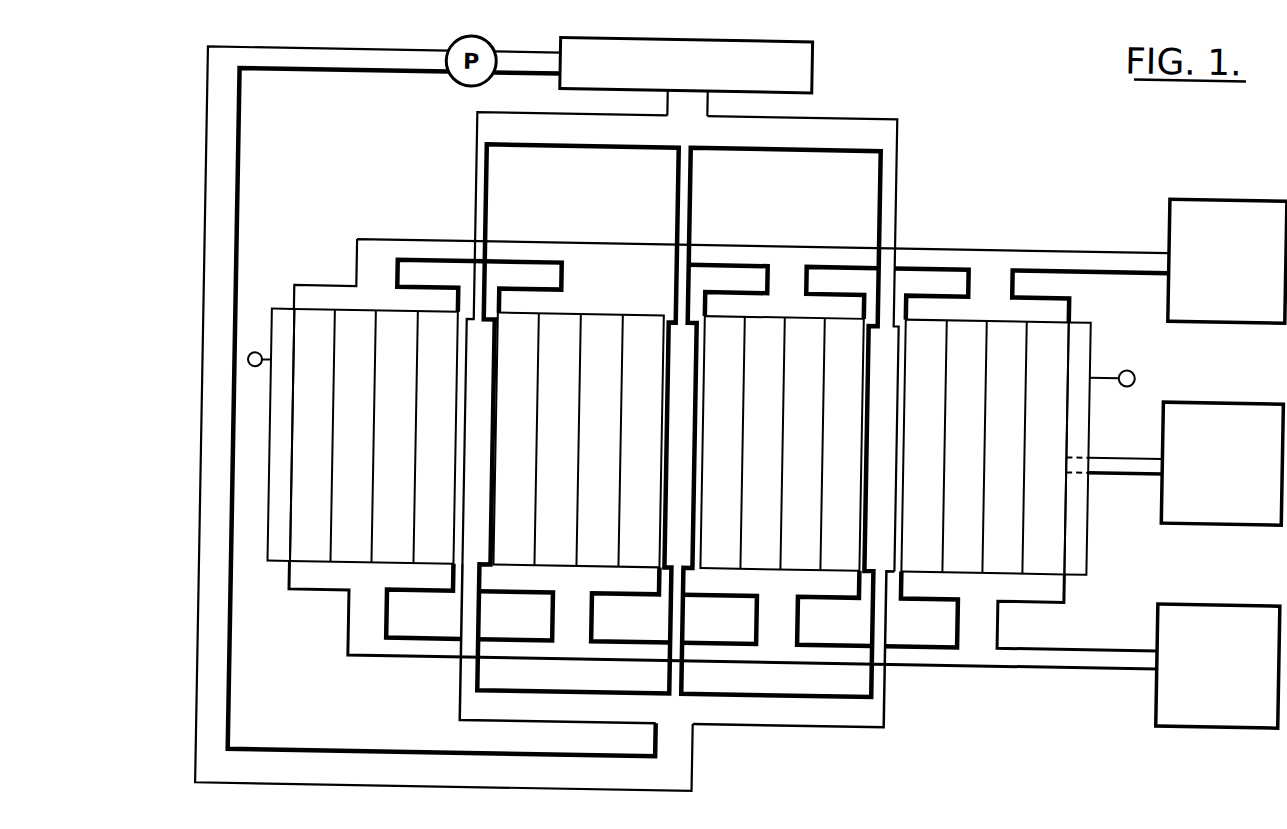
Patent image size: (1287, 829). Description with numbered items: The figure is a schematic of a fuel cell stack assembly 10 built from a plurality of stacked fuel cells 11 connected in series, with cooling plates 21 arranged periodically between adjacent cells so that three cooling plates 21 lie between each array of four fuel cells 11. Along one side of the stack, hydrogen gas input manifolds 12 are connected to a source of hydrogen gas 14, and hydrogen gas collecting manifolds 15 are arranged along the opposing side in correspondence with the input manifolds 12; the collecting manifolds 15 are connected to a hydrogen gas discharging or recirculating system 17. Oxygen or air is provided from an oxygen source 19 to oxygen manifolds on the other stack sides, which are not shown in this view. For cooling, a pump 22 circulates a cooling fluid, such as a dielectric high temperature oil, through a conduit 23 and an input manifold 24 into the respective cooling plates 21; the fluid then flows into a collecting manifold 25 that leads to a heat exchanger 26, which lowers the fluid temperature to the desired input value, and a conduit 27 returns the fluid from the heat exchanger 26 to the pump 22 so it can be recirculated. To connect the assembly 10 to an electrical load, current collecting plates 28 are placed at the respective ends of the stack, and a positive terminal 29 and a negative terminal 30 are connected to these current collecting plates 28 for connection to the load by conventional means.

The fuel cell stack assembly 10 is at (960, 158).
The fuel cells 11 is at (356, 337).
The hydrogen gas input manifolds 12 is at (406, 294).
The source of hydrogen gas 14 is at (1204, 263).
The hydrogen gas collecting manifolds 15 is at (334, 603).
The hydrogen gas discharging or recirculating system 17 is at (1209, 662).
The oxygen source 19 is at (1204, 470).
The cooling plates 21 is at (488, 320).
The pump 22 is at (382, 77).
The conduit 23 is at (202, 405).
The input manifold 24 is at (883, 703).
The collecting manifold 25 is at (856, 114).
The heat exchanger 26 is at (806, 58).
The conduit 27 is at (539, 79).
The current collecting plates 28 is at (287, 311).
The positive terminal 29 is at (254, 373).
The negative terminal 30 is at (1134, 366).